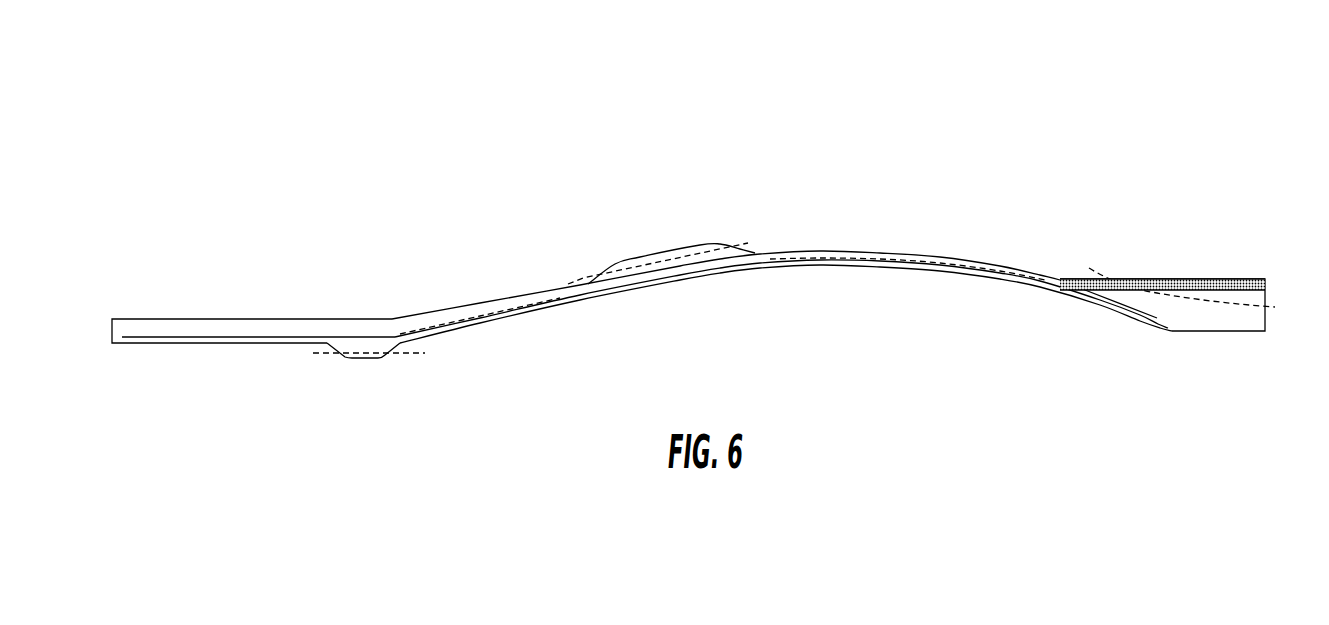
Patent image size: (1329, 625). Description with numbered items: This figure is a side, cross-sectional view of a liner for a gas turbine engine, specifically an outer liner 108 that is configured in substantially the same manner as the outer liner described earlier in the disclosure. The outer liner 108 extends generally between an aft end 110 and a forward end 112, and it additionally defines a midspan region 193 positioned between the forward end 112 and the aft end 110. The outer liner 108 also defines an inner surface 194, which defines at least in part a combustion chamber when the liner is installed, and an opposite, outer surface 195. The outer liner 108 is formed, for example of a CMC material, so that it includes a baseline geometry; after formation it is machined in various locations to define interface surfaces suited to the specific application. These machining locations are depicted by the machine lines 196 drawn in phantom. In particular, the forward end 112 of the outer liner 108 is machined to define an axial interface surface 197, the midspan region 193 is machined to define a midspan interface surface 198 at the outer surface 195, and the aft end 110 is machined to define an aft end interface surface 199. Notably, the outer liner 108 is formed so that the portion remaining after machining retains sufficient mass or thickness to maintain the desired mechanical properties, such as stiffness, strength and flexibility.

The outer liner 108 is at (934, 100).
The aft end 110 is at (1247, 168).
The forward end 112 is at (157, 248).
The midspan region 193 is at (763, 183).
The inner surface 194 is at (932, 270).
The outer surface 195 is at (882, 252).
The machine lines 196 is at (612, 270).
The axial interface surface 197 is at (362, 357).
The midspan interface surface 198 is at (675, 258).
The aft end interface surface 199 is at (1165, 302).